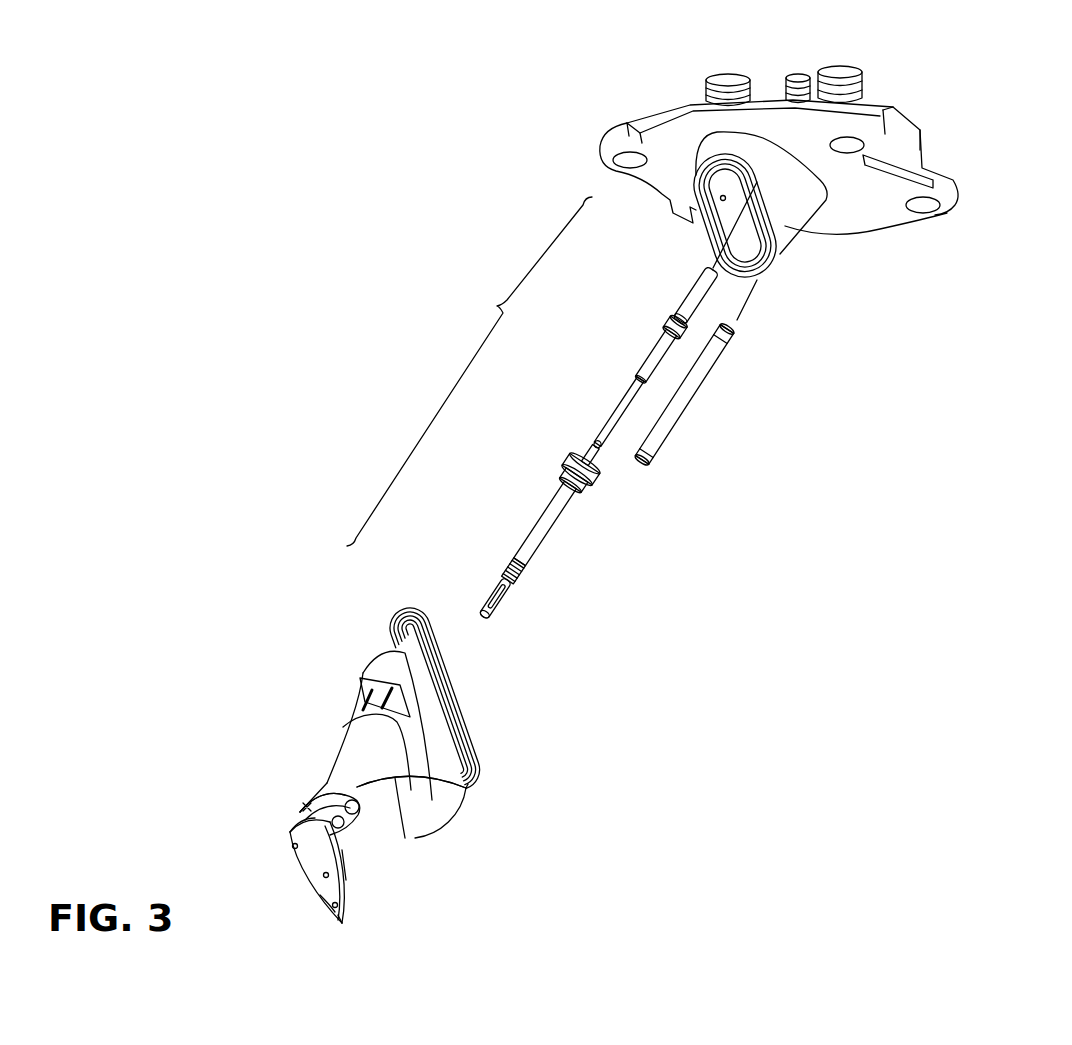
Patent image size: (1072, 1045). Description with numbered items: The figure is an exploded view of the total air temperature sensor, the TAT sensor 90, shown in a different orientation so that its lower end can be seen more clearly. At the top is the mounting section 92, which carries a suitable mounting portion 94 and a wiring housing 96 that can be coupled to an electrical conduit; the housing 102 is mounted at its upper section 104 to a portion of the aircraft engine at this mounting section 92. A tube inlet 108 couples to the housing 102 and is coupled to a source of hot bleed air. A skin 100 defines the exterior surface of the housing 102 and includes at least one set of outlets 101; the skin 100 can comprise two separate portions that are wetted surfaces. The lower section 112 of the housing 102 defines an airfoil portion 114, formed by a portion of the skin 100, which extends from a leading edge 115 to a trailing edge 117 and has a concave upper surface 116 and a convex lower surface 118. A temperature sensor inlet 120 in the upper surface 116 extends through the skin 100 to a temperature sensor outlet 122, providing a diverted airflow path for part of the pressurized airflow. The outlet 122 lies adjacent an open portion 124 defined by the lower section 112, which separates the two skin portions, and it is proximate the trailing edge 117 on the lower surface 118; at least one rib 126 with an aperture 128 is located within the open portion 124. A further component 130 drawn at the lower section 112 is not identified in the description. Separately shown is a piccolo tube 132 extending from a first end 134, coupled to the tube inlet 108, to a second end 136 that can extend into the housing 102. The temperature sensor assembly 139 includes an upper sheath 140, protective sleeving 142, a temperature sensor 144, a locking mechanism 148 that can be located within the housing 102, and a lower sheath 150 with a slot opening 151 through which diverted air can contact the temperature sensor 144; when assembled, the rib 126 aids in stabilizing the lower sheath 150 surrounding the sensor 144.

The TAT sensor 90 is at (672, 558).
The mounting section 92 is at (882, 240).
The mounting portion 94 is at (956, 189).
The wiring housing 96 is at (765, 240).
The skin 100 is at (388, 649).
The set of outlets 101 is at (372, 686).
The housing 102 is at (477, 741).
The upper section 104 is at (400, 604).
The tube inlet 108 is at (792, 76).
The lower section 112 is at (316, 775).
The airfoil portion 114 is at (310, 863).
The leading edge 115 is at (343, 924).
The upper surface 116 is at (328, 906).
The trailing edge 117 is at (290, 832).
The lower surface 118 is at (344, 889).
The temperature sensor inlet 120 is at (318, 886).
The temperature sensor outlet 122 is at (340, 824).
The open portion 124 is at (306, 806).
The rib 126 is at (458, 779).
The aperture 128 is at (406, 821).
The collar 130 is at (310, 824).
The piccolo tube 132 is at (699, 387).
The first end 134 is at (740, 334).
The second end 136 is at (655, 469).
The temperature sensor assembly 139 is at (469, 371).
The upper sheath 140 is at (656, 342).
The protective sleeving 142 is at (700, 300).
The temperature sensor 144 is at (618, 406).
The locking mechanism 148 is at (562, 525).
The lower sheath 150 is at (492, 592).
The slot opening 151 is at (517, 580).